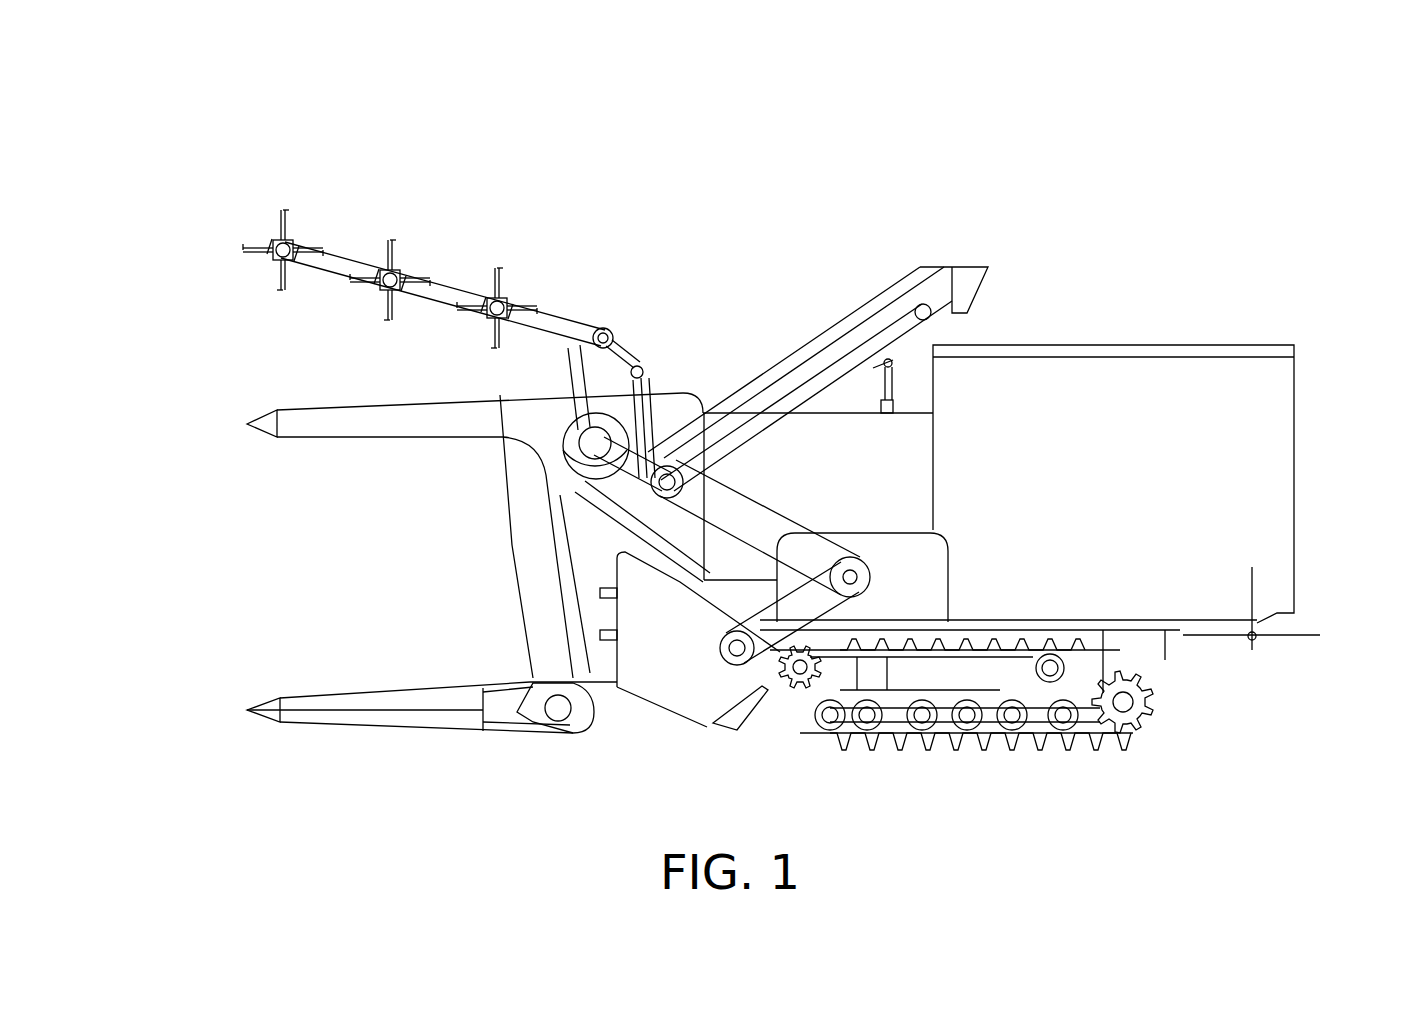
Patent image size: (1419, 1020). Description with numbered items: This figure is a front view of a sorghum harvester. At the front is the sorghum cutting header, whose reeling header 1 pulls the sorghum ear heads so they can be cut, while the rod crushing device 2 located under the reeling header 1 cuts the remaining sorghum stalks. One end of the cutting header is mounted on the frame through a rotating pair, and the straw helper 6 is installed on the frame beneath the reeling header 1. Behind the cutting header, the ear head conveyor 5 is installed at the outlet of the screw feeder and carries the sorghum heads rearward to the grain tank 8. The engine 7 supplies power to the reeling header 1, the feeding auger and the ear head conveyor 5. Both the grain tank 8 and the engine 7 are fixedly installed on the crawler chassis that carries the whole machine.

The reeling header 1 is at (449, 270).
The rod crushing device 2 is at (414, 564).
The ear head conveyor 5 is at (823, 275).
The straw helper 6 is at (379, 459).
The engine 7 is at (1039, 581).
The grain tank 8 is at (1136, 341).